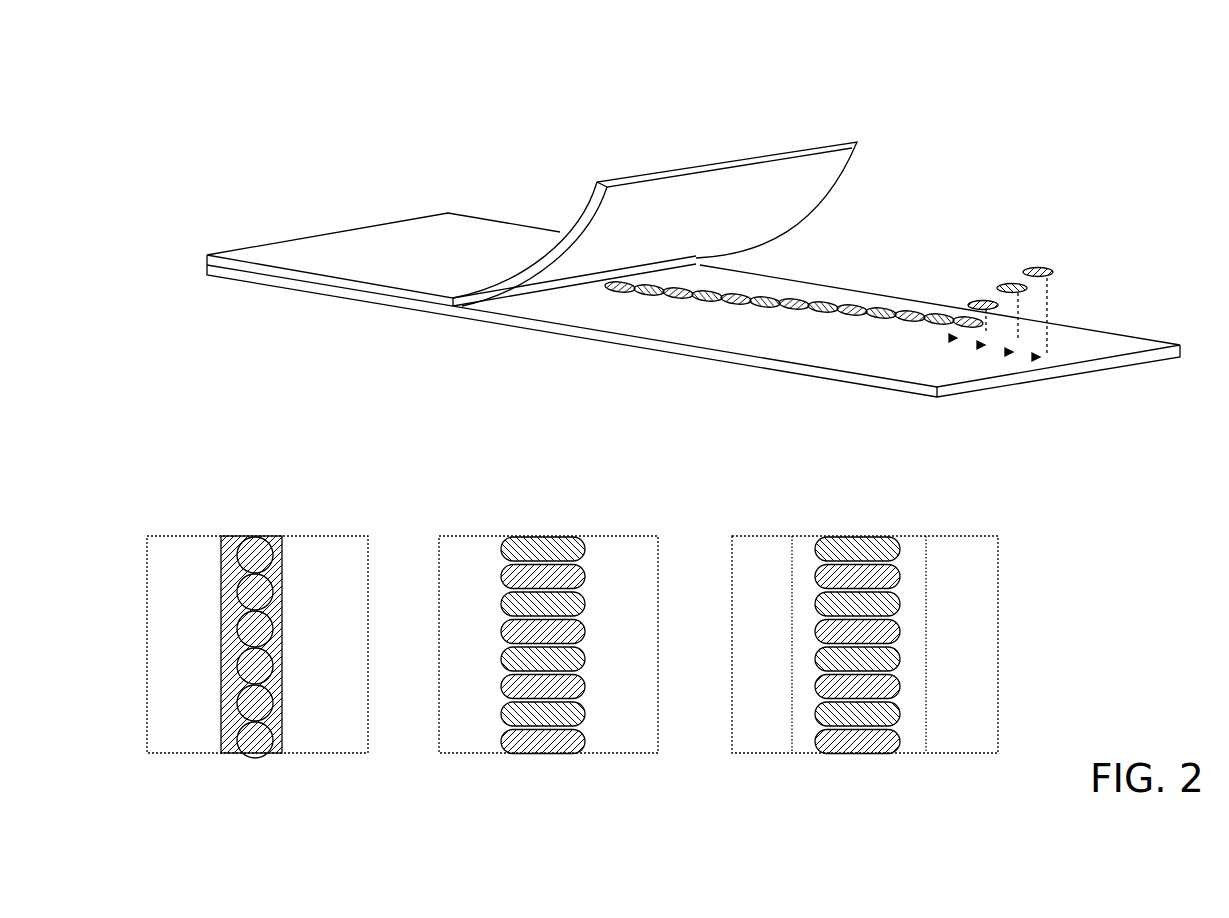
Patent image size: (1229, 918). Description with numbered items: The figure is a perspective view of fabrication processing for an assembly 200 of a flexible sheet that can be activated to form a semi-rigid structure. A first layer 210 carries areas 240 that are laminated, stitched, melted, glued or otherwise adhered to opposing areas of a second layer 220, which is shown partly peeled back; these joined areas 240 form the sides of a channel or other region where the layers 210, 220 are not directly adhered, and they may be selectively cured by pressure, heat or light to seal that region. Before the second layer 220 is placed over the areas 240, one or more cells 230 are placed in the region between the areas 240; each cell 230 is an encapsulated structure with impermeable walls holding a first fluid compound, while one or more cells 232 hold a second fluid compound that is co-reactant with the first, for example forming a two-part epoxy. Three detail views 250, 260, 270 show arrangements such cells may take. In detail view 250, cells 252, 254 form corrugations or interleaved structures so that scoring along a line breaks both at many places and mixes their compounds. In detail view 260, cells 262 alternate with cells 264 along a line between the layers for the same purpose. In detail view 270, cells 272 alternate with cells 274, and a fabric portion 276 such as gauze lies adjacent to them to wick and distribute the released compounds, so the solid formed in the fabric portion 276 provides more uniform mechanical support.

The assembly 200 is at (1172, 112).
The first layer 210 is at (583, 340).
The second layer 220 is at (312, 253).
The cells 230 is at (803, 306).
The cells 232 is at (860, 339).
The areas 240 is at (675, 328).
The detail view 250 is at (257, 635).
The cell 252 is at (237, 665).
The cell 254 is at (268, 625).
The detail view 260 is at (548, 633).
The cells 262 is at (513, 580).
The cells 264 is at (573, 602).
The detail view 270 is at (865, 633).
The cells 272 is at (830, 632).
The cells 274 is at (893, 607).
The fabric portion 276 is at (805, 564).